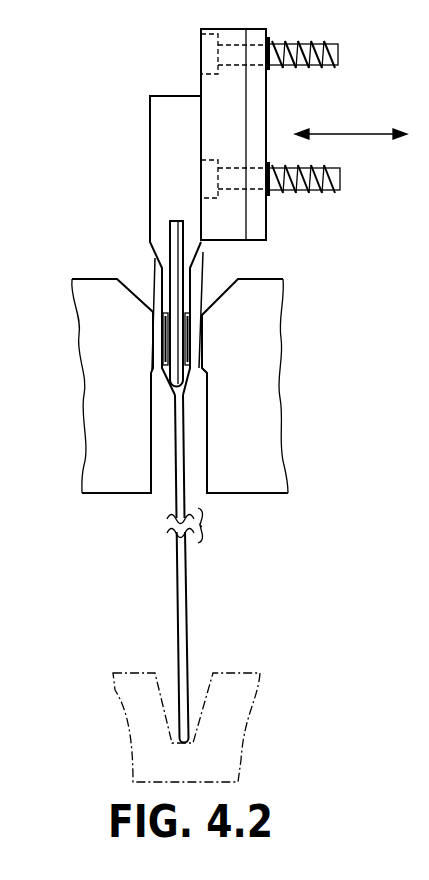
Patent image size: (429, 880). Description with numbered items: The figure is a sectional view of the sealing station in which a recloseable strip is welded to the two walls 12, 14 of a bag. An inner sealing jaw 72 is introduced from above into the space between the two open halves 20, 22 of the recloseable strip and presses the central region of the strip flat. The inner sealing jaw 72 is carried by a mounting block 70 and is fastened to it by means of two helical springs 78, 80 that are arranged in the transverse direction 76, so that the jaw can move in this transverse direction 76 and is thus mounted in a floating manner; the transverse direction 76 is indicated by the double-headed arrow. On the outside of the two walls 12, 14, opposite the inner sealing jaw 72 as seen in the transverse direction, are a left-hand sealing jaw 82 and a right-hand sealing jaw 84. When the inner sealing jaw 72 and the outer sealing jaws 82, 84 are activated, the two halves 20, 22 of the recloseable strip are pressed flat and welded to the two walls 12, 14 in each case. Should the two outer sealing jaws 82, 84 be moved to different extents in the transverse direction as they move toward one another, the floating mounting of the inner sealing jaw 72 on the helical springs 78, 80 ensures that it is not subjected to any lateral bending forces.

The wall 12 is at (152, 270).
The wall 14 is at (201, 285).
The half of the recloseable strip 20 is at (162, 352).
The half of the recloseable strip 22 is at (191, 348).
The drive assembly 70 is at (350, 81).
The inner sealing jaw 72 is at (172, 232).
The transverse direction 76 is at (355, 133).
The helical spring 78 is at (299, 68).
The helical spring 80 is at (310, 190).
The left-hand sealing jaw 82 is at (105, 482).
The right-hand sealing jaw 84 is at (263, 480).